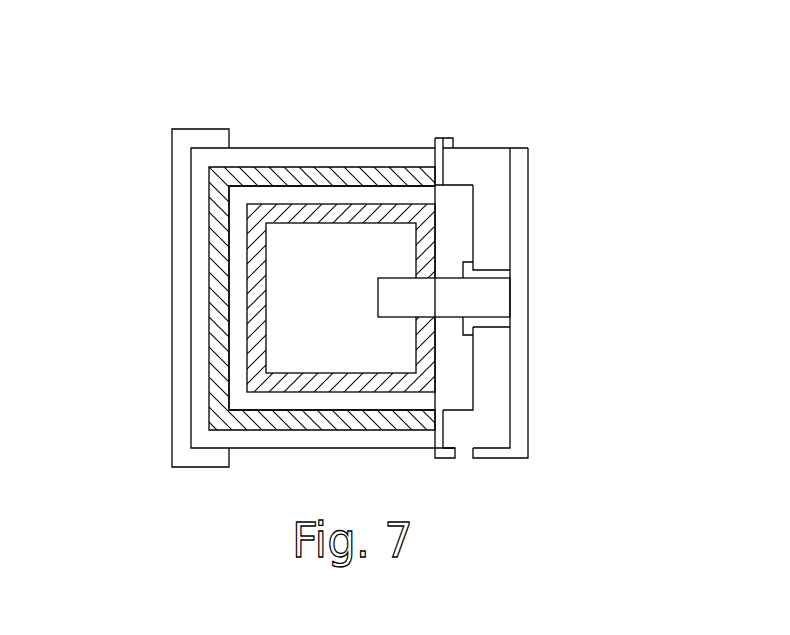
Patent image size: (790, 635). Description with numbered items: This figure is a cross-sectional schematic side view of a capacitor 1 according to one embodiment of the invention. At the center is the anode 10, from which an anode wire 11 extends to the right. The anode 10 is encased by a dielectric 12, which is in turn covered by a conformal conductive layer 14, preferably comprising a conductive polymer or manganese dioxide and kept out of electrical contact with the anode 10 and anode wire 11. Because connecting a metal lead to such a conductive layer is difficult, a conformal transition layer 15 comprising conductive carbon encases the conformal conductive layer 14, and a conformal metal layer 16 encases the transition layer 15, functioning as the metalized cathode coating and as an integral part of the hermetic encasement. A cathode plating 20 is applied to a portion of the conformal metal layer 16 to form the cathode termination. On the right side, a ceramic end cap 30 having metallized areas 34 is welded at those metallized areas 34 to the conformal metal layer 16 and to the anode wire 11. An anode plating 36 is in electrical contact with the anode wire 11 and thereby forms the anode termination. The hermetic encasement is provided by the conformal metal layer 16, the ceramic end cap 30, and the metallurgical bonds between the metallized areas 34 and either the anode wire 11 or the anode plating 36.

The capacitor 1 is at (153, 254).
The anode 10 is at (390, 245).
The anode wire 11 is at (472, 297).
The dielectric 12 is at (363, 210).
The conformal conductive layer 14 is at (322, 197).
The conformal transition layer 15 is at (275, 175).
The conformal metal layer 16 is at (222, 160).
The cathode plating 20 is at (183, 420).
The ceramic end cap 30 is at (494, 189).
The metallized areas 34 is at (440, 145).
The anode plating 36 is at (520, 432).